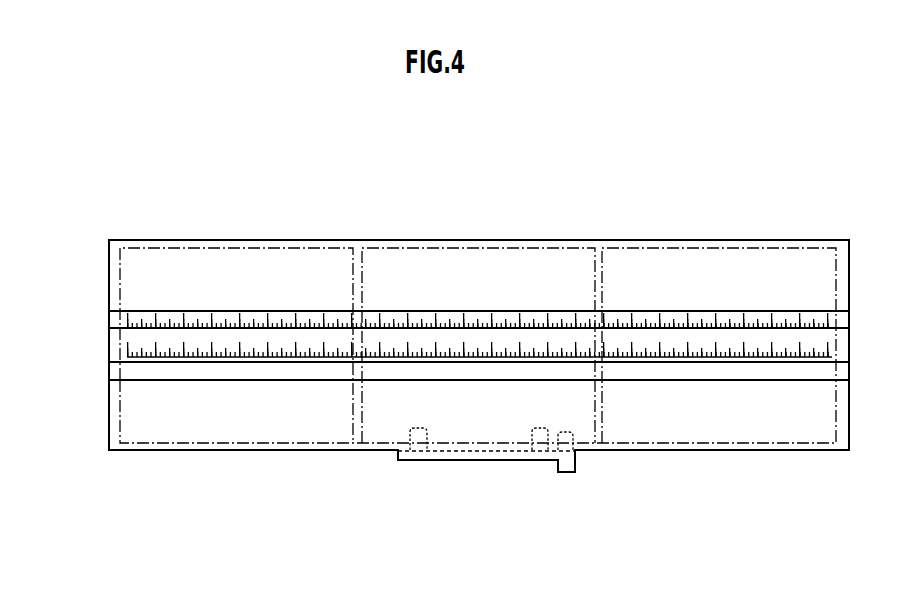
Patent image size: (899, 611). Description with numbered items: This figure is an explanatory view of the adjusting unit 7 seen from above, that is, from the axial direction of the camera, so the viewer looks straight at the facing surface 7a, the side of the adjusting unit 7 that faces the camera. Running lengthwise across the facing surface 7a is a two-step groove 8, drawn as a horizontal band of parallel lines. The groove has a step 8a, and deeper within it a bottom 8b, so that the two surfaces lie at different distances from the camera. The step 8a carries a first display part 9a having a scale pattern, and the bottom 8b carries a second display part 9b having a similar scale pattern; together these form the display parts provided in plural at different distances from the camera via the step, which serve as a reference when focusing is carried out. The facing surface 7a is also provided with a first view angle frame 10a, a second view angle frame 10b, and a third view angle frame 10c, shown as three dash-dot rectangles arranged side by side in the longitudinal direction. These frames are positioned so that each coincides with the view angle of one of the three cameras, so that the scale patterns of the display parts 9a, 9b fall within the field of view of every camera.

The adjusting unit 7 is at (203, 453).
The facing surface 7a is at (290, 410).
The two-step groove 8 is at (108, 350).
The step 8a is at (163, 370).
The bottom 8b is at (127, 340).
The first display part 9a is at (170, 303).
The second display part 9b is at (120, 327).
The first view angle frame 10a is at (237, 248).
The second view angle frame 10b is at (425, 248).
The third view angle frame 10c is at (624, 248).